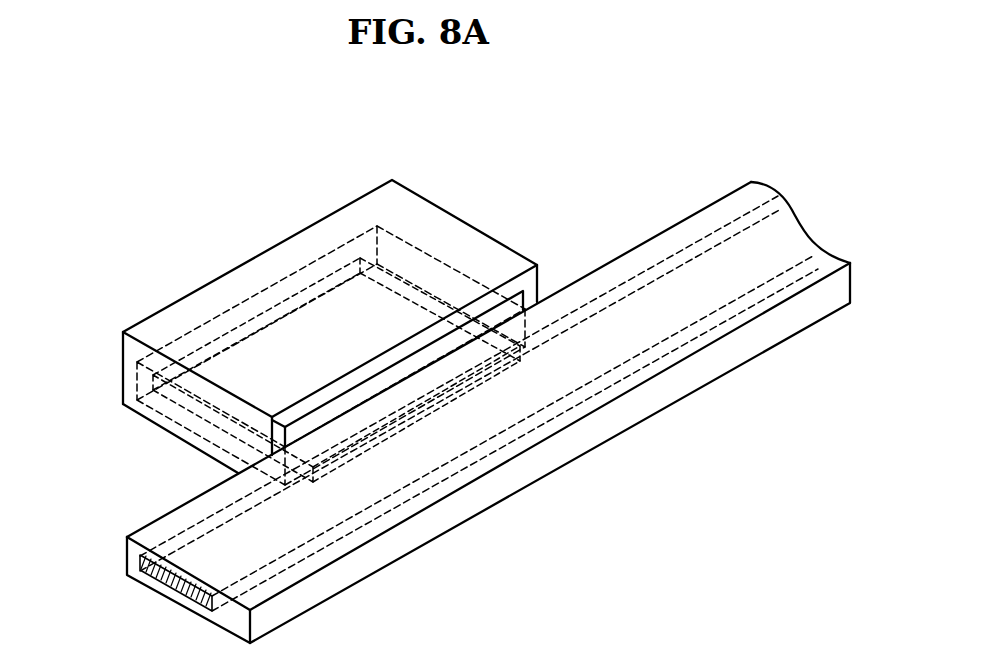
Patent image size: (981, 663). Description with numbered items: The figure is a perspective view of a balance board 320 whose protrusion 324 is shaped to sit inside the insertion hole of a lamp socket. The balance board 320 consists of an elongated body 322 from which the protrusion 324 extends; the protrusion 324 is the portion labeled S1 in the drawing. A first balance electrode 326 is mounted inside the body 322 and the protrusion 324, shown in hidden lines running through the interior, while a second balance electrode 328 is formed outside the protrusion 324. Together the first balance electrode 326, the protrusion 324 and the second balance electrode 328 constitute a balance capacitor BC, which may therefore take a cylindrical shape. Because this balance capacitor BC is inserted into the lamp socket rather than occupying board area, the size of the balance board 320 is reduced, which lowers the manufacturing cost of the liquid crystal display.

The balance board 320 is at (729, 140).
The body 322 is at (547, 455).
The protrusion 324 is at (152, 383).
The first balance electrode 326 is at (178, 355).
The second balance electrode 328 is at (124, 405).
The upper block section S1 is at (232, 255).
The balance capacitor BC is at (63, 307).